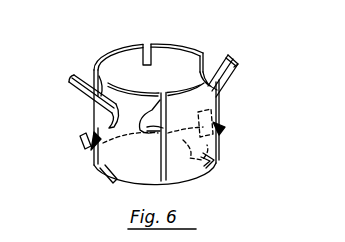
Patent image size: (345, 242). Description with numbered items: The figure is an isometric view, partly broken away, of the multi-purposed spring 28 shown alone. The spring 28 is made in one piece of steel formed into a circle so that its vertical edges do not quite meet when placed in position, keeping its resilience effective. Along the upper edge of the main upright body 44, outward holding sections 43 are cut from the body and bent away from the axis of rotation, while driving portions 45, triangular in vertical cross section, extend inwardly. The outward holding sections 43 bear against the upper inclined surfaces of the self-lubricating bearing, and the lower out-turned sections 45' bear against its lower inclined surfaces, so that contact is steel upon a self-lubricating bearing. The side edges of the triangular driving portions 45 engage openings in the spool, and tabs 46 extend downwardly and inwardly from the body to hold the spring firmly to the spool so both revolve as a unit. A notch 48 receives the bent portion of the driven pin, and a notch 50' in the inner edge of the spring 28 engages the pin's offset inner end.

The multi-purposed spring 28 is at (197, 42).
The outward holding sections 43 is at (73, 85).
The main upright body 44 is at (155, 144).
The driving portions 45 is at (128, 100).
The lower out-turned sections 45' is at (154, 129).
The tabs 46 is at (107, 184).
The notch 48 is at (144, 47).
The notch 50' is at (170, 116).